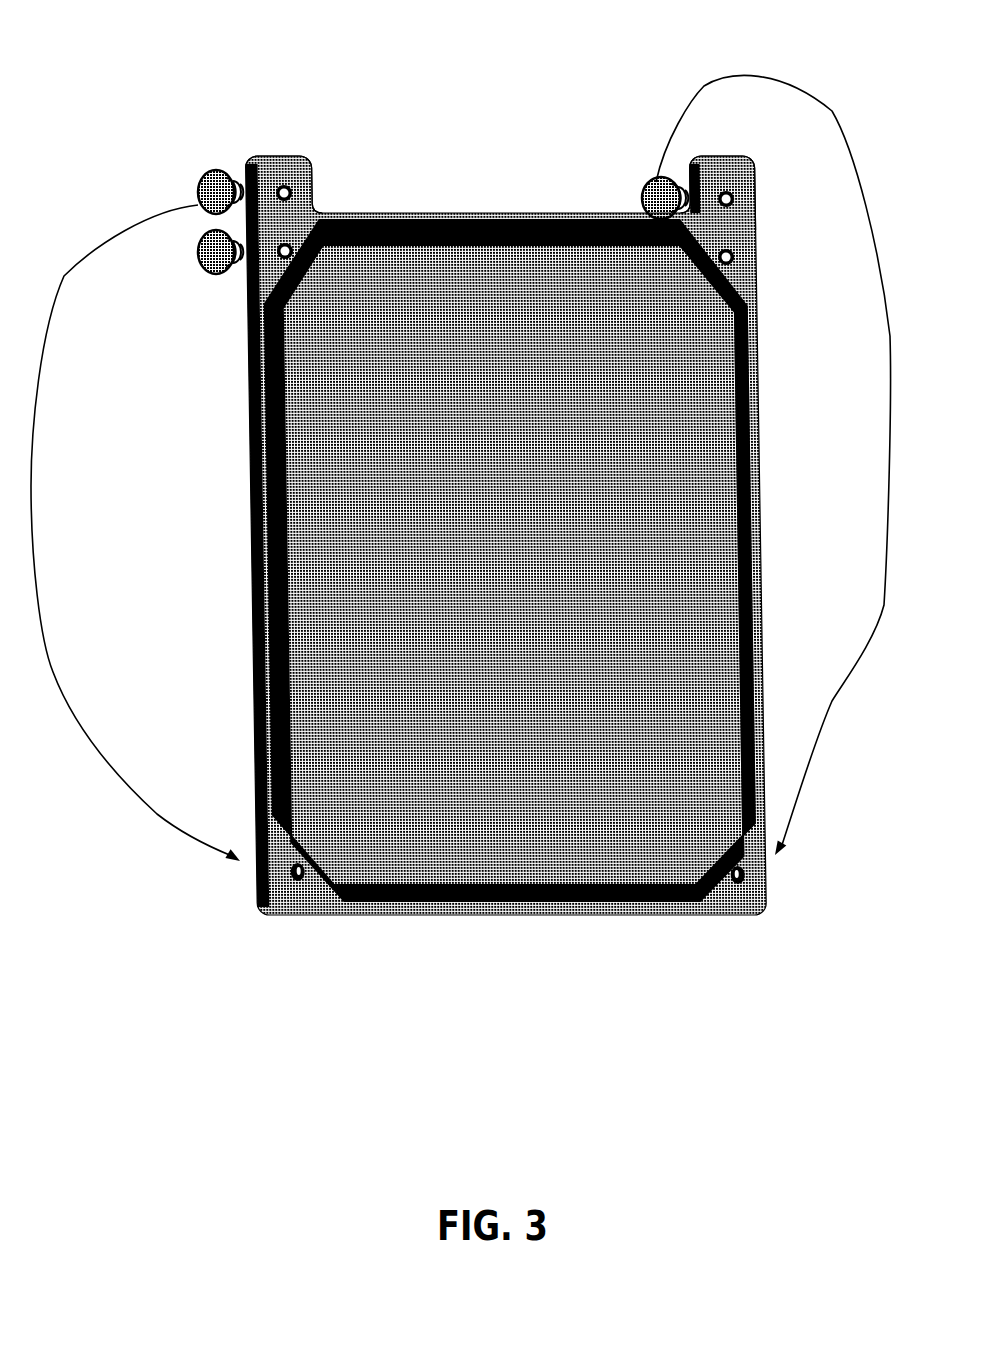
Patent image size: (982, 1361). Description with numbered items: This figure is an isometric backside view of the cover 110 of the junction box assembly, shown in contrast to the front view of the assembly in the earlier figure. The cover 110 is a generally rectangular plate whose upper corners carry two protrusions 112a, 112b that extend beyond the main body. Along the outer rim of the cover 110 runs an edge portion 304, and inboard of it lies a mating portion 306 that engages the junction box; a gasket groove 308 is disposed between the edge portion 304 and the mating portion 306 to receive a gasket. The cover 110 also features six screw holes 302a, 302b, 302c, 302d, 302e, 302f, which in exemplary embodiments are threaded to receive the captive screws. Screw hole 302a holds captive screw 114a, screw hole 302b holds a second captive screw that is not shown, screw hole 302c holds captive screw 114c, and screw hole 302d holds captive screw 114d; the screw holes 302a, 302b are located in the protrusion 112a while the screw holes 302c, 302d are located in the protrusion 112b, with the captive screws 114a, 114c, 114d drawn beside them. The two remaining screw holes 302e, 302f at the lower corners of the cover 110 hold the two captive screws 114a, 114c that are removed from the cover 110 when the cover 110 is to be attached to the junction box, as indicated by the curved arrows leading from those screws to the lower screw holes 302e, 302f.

The cover 110 is at (460, 460).
The protrusion 112a is at (730, 172).
The protrusion 112b is at (287, 163).
The captive screw 114a is at (653, 188).
The captive screw 114c is at (207, 187).
The captive screw 114d is at (217, 254).
The screw hole 302a is at (732, 199).
The screw hole 302b is at (732, 257).
The screw hole 302c is at (290, 193).
The screw hole 302d is at (283, 255).
The screw hole 302e is at (748, 877).
The screw hole 302f is at (292, 872).
The edge portion 304 is at (253, 633).
The mating portion 306 is at (290, 635).
The gasket groove 308 is at (545, 238).